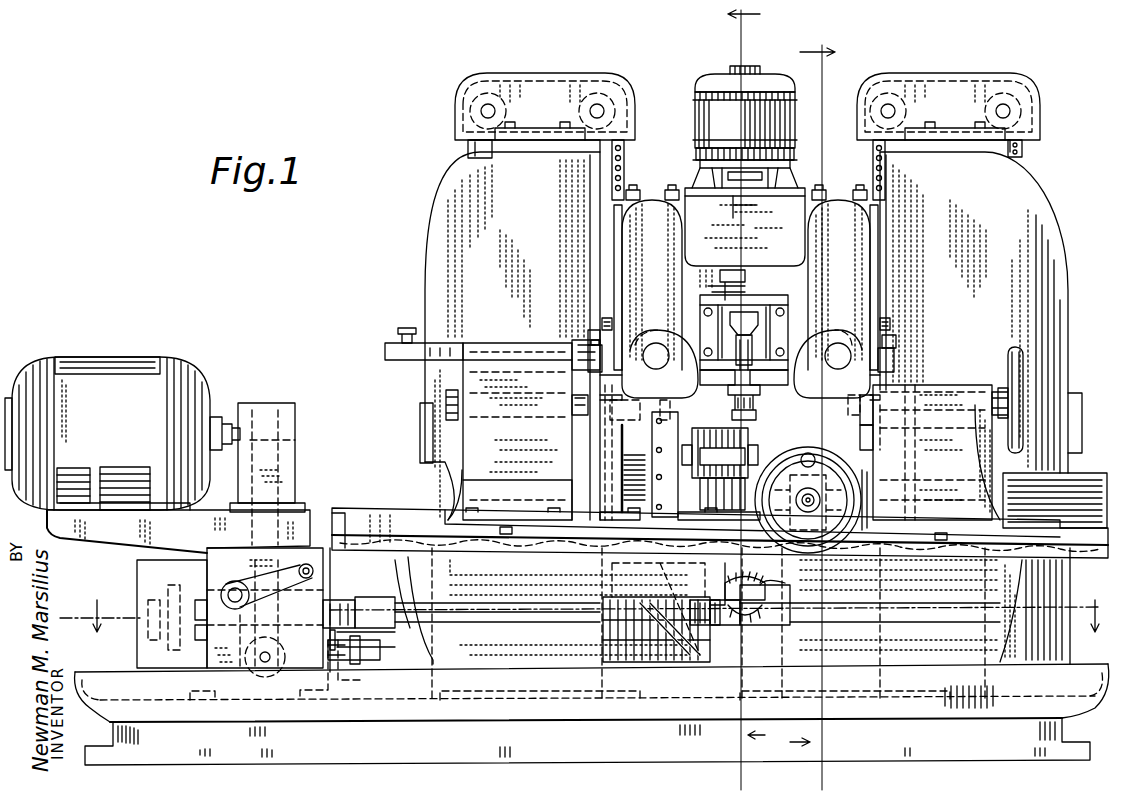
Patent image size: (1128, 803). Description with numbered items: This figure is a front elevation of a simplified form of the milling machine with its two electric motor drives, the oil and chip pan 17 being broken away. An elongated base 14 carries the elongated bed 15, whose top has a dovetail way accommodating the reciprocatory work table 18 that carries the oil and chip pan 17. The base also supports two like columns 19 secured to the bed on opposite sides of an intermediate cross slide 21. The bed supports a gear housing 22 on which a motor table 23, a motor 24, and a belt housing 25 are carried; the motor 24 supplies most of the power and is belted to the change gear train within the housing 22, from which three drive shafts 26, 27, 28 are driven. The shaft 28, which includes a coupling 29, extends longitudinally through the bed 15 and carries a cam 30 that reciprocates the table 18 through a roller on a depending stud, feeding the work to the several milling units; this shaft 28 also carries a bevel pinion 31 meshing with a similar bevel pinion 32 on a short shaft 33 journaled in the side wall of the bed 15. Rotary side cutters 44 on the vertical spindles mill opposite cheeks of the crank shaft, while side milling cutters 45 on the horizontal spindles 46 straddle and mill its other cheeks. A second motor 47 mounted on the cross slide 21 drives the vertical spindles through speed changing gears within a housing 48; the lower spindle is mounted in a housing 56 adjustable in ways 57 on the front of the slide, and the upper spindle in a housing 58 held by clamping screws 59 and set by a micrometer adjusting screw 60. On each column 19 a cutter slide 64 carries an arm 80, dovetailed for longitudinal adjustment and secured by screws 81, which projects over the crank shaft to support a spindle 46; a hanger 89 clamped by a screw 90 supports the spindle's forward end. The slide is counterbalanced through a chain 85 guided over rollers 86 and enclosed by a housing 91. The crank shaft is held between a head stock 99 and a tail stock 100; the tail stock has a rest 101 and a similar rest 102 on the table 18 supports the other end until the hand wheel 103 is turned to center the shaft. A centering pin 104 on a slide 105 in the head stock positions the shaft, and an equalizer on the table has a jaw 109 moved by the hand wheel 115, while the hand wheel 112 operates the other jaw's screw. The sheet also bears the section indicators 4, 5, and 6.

The base 14 is at (626, 750).
The bed 15 is at (715, 624).
The oil and chip pan 17 is at (378, 518).
The work table 18 is at (540, 538).
The columns 19 is at (763, 334).
The intermediate cross slide 21 is at (744, 364).
The gear housing 22 is at (230, 612).
The motor table 23 is at (178, 531).
The motor 24 is at (122, 433).
The belt housing 25 is at (288, 460).
The drive shaft 26 is at (320, 672).
The drive shaft 27 is at (398, 650).
The drive shaft 28 is at (338, 602).
The coupling 29 is at (380, 600).
The cam 30 is at (630, 598).
The bevel pinion 31 is at (785, 603).
The bevel pinion 32 is at (775, 580).
The short shaft 33 is at (752, 584).
The rotary side cutters 44 is at (734, 408).
The side milling cutters 45 is at (645, 388).
The horizontal spindles 46 is at (650, 345).
The second motor 47 is at (745, 127).
The housing 48 is at (745, 227).
The housing 56 is at (720, 453).
The ways 57 is at (680, 486).
The housing 58 is at (743, 334).
The clamping screws 59 is at (748, 315).
The micrometer adjusting screw 60 is at (735, 300).
The cutter slide 64 is at (588, 349).
The arm 80 is at (746, 285).
The screws 81 is at (672, 190).
The chain 85 is at (468, 145).
The rollers 86 is at (478, 98).
The hanger 89 is at (588, 335).
The screw 90 is at (602, 322).
The housing 91 is at (545, 75).
The head stock 99 is at (517, 431).
The tail stock 100 is at (905, 477).
The rest 101 is at (875, 425).
The rest 102 is at (602, 470).
The hand wheel 103 is at (1013, 352).
The centering pin 104 is at (586, 366).
The slide 105 is at (452, 343).
The jaw 109 is at (873, 445).
The hand wheel 112 is at (862, 493).
The hand wheel 115 is at (810, 575).
The section line 4- 4 is at (580, 627).
The section line 5- 5 is at (732, 396).
The section line 6- 6 is at (825, 413).